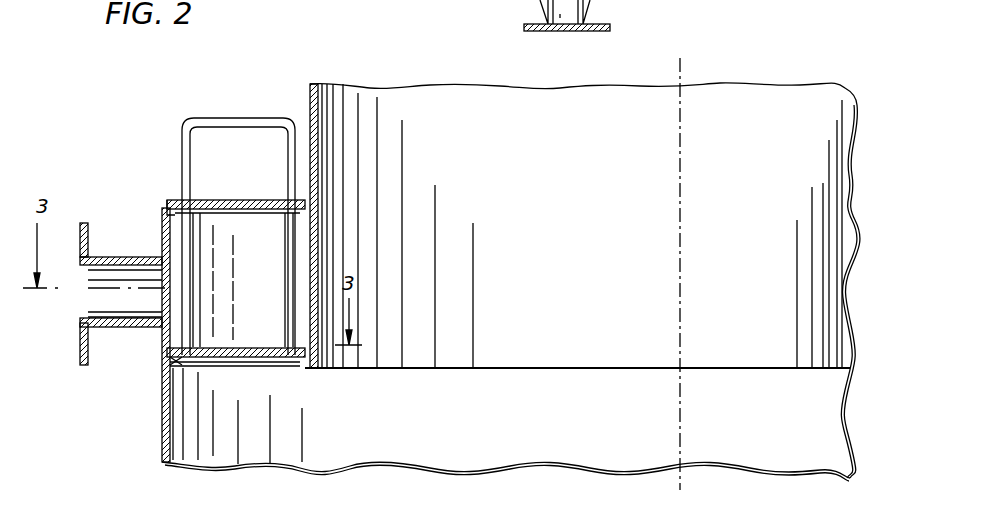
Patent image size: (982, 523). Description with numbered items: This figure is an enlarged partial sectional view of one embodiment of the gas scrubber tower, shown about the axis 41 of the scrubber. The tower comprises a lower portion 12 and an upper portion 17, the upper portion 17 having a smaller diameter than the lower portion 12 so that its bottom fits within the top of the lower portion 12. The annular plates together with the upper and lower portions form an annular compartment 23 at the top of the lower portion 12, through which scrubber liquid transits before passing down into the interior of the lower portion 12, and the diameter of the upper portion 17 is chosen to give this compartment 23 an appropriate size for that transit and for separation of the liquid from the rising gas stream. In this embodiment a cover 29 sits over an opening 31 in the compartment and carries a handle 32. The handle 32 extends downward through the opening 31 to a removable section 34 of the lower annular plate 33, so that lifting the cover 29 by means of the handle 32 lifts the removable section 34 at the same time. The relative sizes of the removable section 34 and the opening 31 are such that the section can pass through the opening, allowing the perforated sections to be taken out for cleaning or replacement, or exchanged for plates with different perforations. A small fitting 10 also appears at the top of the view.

The fitting 10 is at (590, 22).
The lower portion 12 is at (162, 402).
The upper portion 17 is at (310, 96).
The annular compartment 23 is at (262, 301).
The cover 29 is at (228, 200).
The opening 31 is at (247, 213).
The handle 32 is at (225, 120).
The lower annular plate 33 is at (186, 364).
The removable section 34 is at (245, 347).
The axis 41 is at (680, 188).